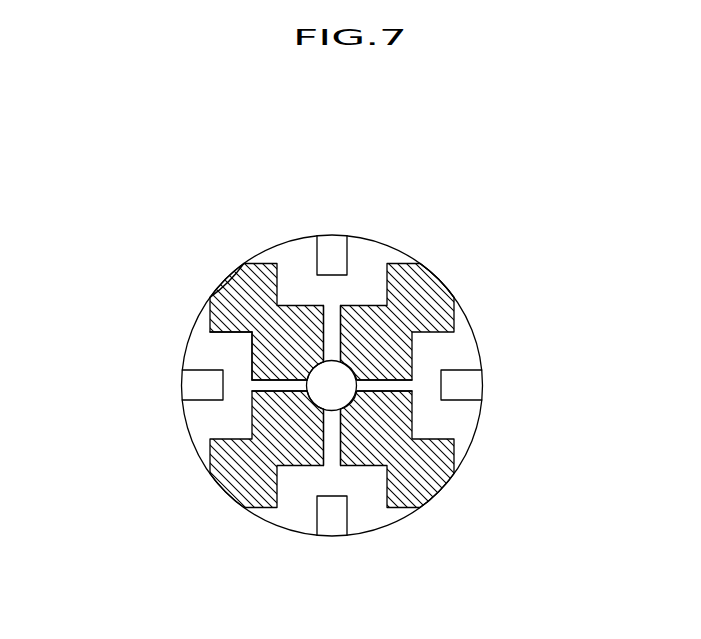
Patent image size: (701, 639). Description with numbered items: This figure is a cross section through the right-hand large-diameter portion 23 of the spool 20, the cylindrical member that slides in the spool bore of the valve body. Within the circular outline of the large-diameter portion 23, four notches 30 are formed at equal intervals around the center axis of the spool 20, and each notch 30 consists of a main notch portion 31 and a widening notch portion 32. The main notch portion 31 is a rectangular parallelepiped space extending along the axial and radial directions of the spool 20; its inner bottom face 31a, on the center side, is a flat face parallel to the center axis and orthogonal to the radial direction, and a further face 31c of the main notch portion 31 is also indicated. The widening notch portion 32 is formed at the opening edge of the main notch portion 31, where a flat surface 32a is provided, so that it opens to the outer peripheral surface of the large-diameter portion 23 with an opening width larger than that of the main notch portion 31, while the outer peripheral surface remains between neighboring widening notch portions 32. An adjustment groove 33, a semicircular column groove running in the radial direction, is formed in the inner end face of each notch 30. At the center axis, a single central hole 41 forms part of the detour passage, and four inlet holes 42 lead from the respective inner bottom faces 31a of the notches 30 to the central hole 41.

The spool 20 is at (104, 321).
The large-diameter portion 23 is at (457, 308).
The notch 30 is at (345, 143).
The main notch portion 31 is at (275, 261).
The inner bottom face 31a is at (418, 355).
The bottom surface of core member arm 31c is at (443, 337).
The widening notch portion 32 is at (282, 287).
The flat surface 32a is at (253, 258).
The adjustment groove 33 is at (343, 257).
The central hole 41 is at (350, 404).
The inlet hole 42 is at (340, 333).